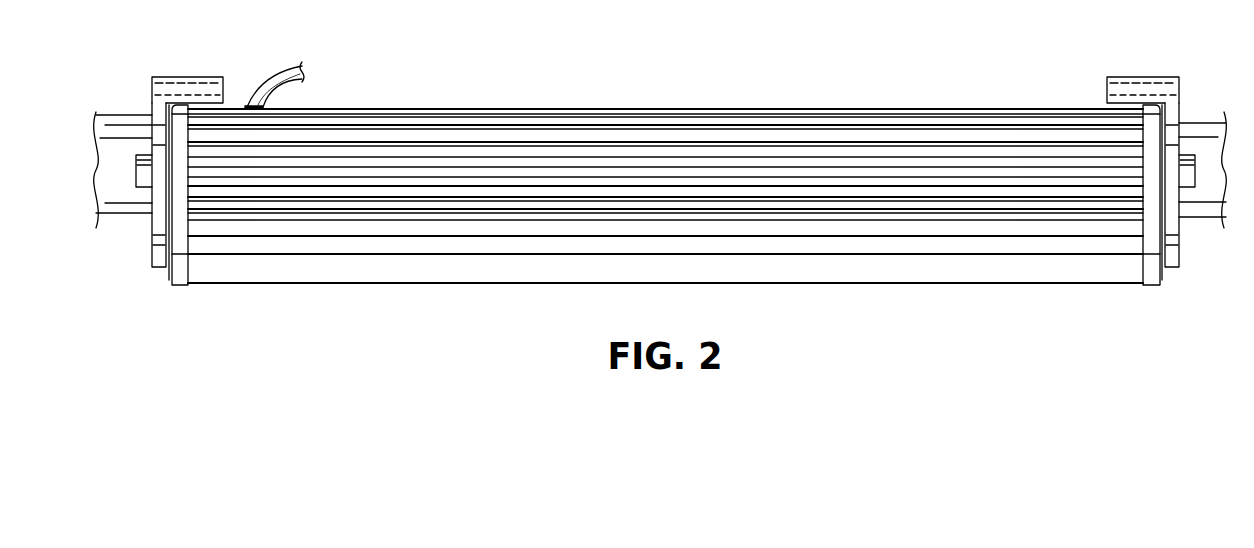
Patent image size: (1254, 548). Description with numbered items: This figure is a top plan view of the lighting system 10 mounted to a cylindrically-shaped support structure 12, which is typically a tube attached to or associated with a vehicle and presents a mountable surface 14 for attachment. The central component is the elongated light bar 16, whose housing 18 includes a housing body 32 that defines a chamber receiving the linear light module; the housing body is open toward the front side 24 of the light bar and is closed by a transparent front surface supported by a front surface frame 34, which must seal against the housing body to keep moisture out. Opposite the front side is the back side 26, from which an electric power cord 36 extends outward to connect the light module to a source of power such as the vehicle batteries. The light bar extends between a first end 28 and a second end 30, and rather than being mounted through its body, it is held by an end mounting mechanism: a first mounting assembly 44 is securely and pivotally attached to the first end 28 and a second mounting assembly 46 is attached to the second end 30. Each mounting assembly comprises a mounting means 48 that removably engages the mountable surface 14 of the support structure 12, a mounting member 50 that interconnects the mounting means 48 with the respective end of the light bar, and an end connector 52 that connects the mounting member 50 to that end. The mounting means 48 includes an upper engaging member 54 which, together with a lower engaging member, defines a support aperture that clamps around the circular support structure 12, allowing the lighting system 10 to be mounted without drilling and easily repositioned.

The lighting system 10 is at (657, 183).
The support structure 12 is at (1200, 202).
The mountable surface 14 is at (104, 208).
The elongated light bar 16 is at (768, 96).
The housing 18 is at (355, 271).
The front side 24 is at (506, 298).
The back side 26 is at (447, 86).
The first end 28 is at (172, 301).
The second end 30 is at (1159, 303).
The housing body 32 is at (586, 136).
The front surface frame 34 is at (895, 265).
The electric power cord 36 is at (265, 90).
The first mounting assembly 44 is at (146, 277).
The second mounting assembly 46 is at (1184, 289).
The mounting means 48 is at (202, 64).
The mounting member 50 is at (157, 133).
The end connector 52 is at (142, 170).
The upper engaging member 54 is at (164, 92).